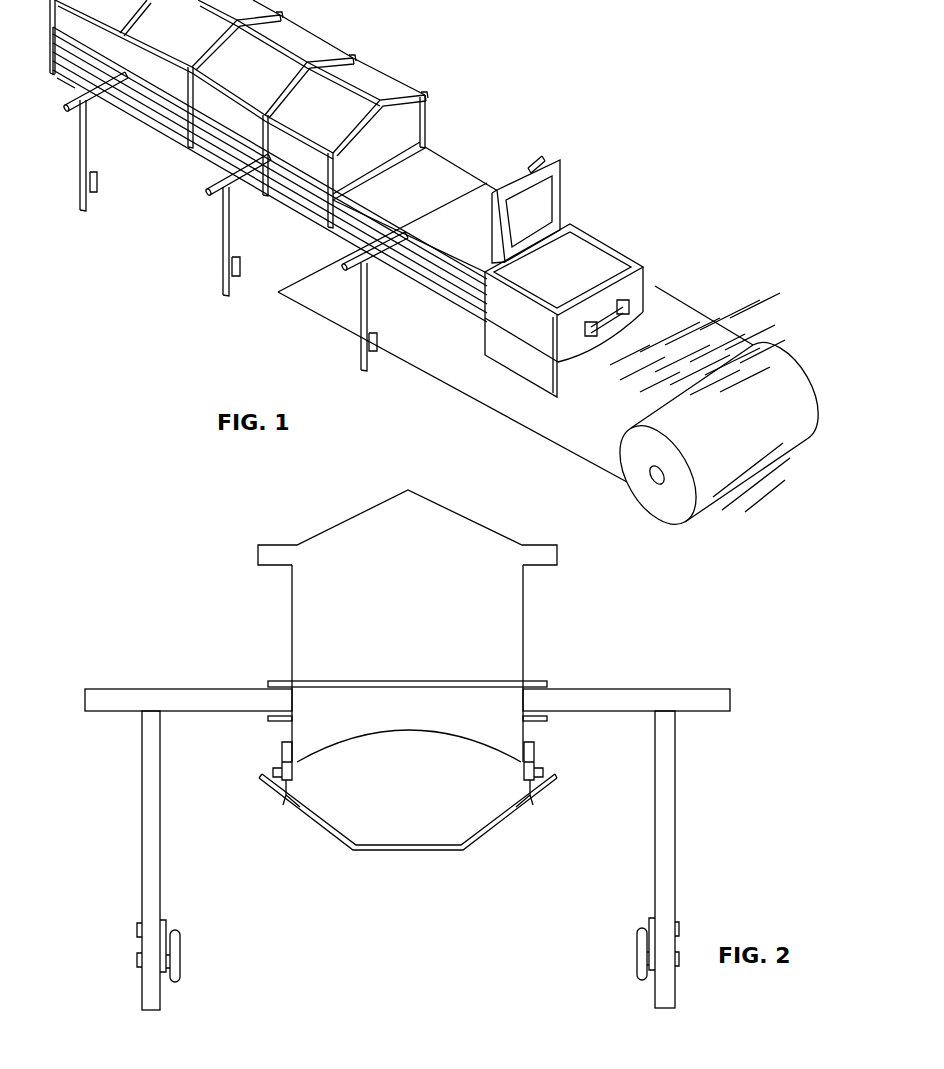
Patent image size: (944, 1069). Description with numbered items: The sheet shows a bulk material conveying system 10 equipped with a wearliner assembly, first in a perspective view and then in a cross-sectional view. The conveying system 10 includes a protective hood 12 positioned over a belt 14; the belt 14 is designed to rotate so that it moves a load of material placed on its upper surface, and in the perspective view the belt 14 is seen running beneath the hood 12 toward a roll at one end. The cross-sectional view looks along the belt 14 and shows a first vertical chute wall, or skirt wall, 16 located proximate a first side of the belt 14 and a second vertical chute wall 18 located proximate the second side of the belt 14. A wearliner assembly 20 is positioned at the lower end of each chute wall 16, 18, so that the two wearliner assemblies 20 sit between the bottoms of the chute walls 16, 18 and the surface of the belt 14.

In FIG. 1, the bulk material conveying system 10 is at (172, 327).
In FIG. 1, the protective hood 12 is at (289, 42).
In FIG. 1, the belt 14 is at (668, 312).
In FIG. 2, the belt 14 is at (496, 830).
In FIG. 2, the first vertical chute wall 16 is at (524, 618).
In FIG. 2, the second vertical chute wall 18 is at (291, 630).
In FIG. 2, the wearliner assembly 20 is at (274, 762).